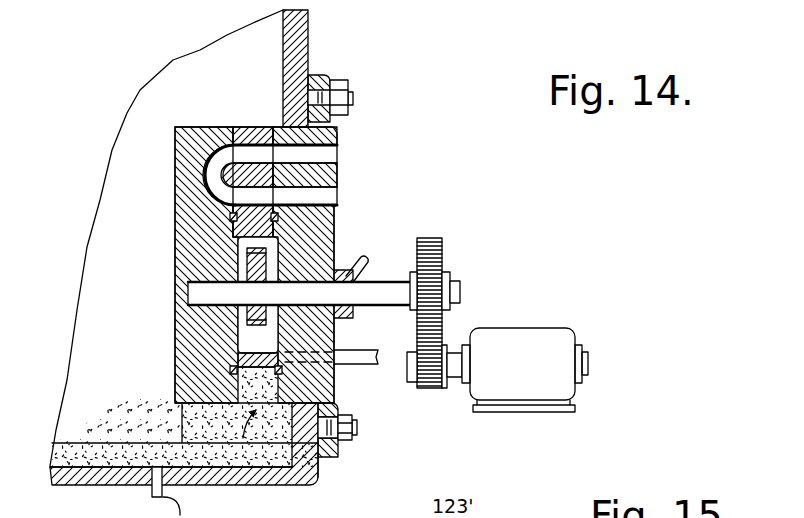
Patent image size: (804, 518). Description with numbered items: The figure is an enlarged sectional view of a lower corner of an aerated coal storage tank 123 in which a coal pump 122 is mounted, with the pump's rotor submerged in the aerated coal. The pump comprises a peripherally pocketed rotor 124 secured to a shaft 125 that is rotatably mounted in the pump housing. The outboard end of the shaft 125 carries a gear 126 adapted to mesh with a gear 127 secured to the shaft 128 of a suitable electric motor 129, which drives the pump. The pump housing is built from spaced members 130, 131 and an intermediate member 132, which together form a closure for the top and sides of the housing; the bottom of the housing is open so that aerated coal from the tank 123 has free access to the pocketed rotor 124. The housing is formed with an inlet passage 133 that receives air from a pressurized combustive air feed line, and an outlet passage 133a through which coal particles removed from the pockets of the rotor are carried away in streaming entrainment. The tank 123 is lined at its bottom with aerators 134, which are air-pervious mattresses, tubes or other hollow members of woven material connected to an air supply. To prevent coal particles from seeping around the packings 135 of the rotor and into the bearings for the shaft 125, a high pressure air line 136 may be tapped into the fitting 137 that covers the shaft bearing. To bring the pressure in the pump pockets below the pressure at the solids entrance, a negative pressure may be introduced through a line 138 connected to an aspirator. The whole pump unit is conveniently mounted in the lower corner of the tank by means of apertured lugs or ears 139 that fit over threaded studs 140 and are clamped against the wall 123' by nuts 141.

The coal pump 122 is at (337, 245).
The aerated coal storage tank 123 is at (184, 460).
The wall 123' is at (333, 68).
The peripherally pocketed rotor 124 is at (252, 320).
The shaft 125 is at (375, 288).
The gear 126 is at (443, 252).
The gear 127 is at (436, 390).
The shaft 128 is at (456, 346).
The electric motor 129 is at (553, 335).
The spaced member 130 is at (336, 227).
The spaced member 131 is at (178, 237).
The intermediate member 132 is at (253, 126).
The inlet passage 133 is at (333, 150).
The outlet passage 133a is at (332, 193).
The aerators 134 is at (128, 460).
The packings 135 is at (230, 218).
The high pressure air line 136 is at (350, 262).
The fitting 137 is at (352, 315).
The line 138 is at (357, 356).
The apertured lugs or ears 139 is at (318, 76).
The threaded studs 140 is at (345, 99).
The nuts 141 is at (333, 112).